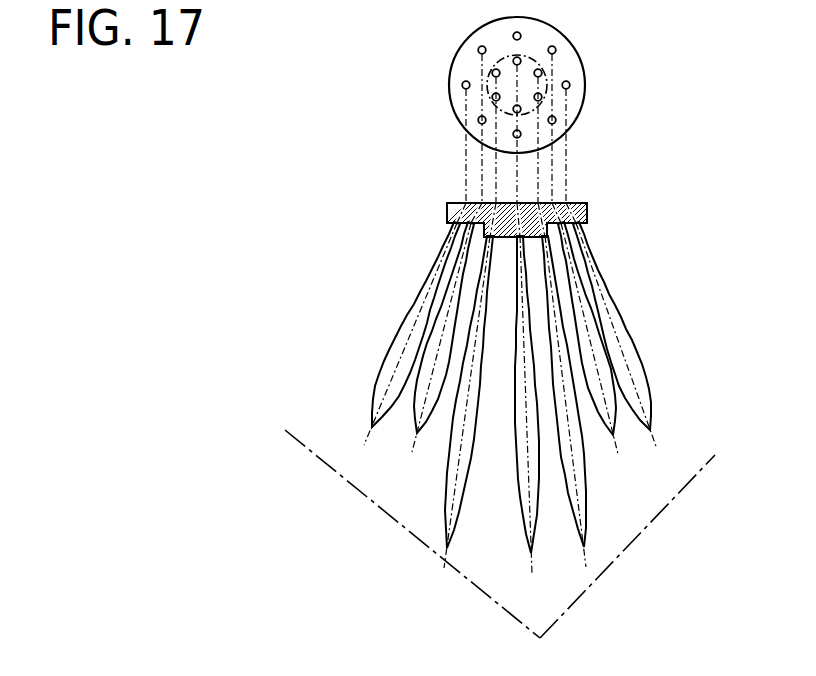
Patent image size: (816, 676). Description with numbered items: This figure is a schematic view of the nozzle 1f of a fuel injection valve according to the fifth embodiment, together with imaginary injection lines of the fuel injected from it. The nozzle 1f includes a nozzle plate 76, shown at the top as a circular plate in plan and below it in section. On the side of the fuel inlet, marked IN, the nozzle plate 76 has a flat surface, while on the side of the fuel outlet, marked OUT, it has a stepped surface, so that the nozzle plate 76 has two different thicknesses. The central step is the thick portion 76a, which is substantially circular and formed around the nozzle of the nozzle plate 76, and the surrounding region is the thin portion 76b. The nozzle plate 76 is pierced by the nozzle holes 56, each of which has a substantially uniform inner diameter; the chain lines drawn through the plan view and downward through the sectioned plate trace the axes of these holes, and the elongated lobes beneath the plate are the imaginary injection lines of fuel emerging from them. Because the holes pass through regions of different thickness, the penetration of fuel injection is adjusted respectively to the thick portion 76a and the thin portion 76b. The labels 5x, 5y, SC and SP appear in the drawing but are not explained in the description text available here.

The nozzle 1f is at (603, 65).
The nozzle holes 56 is at (464, 83).
The nozzle hole plate 5x is at (590, 214).
The nozzle plate 76 is at (446, 221).
The thick portion 76a is at (497, 240).
The thin portion 76b is at (585, 224).
The fuel spray 5y is at (362, 438).
The fuel inlet side IN is at (580, 195).
The fuel outlet side OUT is at (590, 237).
The spray center line SC is at (372, 497).
The spray plane SP is at (653, 519).